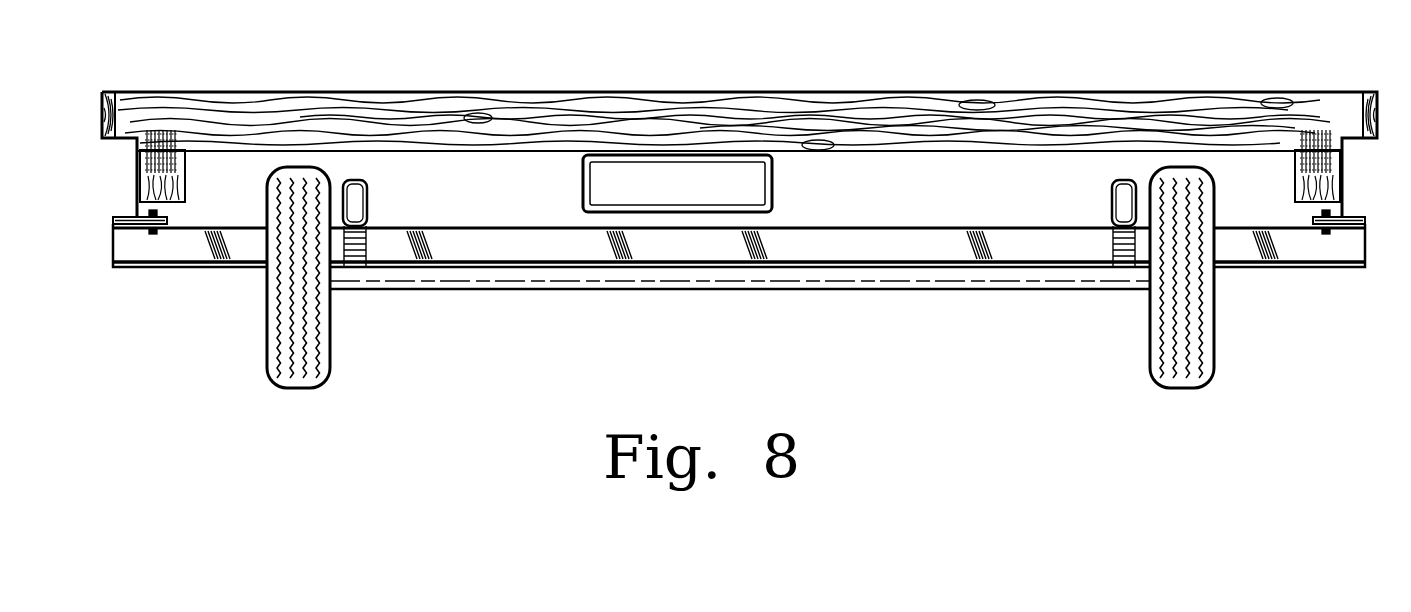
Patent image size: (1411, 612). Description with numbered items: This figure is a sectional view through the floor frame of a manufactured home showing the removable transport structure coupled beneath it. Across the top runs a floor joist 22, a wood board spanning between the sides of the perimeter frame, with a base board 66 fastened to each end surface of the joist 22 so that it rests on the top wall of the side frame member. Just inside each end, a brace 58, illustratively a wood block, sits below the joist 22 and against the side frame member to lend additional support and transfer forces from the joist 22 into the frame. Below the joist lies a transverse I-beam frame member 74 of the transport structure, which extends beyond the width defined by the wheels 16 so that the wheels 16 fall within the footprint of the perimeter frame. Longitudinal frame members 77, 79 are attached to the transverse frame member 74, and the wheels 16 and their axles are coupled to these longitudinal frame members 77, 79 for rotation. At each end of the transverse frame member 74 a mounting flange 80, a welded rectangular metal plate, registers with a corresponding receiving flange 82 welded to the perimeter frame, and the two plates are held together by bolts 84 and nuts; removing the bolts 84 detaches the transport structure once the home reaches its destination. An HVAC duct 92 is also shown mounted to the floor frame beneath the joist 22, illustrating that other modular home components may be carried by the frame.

The wheels 16 is at (330, 347).
The floor joist 22 is at (672, 92).
The brace 58 is at (185, 183).
The base board 66 is at (104, 105).
The transverse I-beam frame member 74 is at (853, 240).
The longitudinal frame member 77 is at (367, 203).
The longitudinal frame member 79 is at (1112, 203).
The mounting flange 80 is at (168, 222).
The receiving flange 82 is at (113, 219).
The bolt 84 is at (153, 234).
The HVAC duct 92 is at (773, 170).